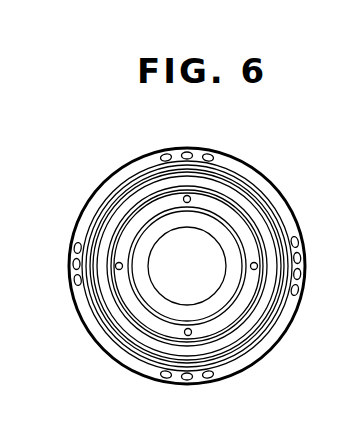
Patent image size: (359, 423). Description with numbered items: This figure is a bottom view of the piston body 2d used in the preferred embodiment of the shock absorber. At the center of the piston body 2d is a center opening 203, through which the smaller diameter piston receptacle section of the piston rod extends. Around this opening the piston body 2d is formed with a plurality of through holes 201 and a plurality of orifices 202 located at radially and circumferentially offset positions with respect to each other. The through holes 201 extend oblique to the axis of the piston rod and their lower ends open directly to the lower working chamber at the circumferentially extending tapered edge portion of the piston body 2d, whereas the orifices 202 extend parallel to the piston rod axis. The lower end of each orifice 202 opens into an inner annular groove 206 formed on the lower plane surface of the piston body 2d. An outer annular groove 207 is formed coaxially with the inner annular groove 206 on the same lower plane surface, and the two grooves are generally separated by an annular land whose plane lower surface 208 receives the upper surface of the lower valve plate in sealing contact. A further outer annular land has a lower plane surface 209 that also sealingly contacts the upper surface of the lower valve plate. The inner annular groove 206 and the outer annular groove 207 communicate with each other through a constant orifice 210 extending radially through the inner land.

The piston body 2d is at (262, 163).
The through holes 201 is at (304, 268).
The orifices 202 is at (187, 203).
The center opening 203 is at (149, 266).
The inner annular groove 206 is at (115, 208).
The outer annular groove 207 is at (97, 227).
The plane lower surface 208 is at (152, 213).
The lower plane surface 209 is at (85, 216).
The constant orifice 210 is at (181, 258).